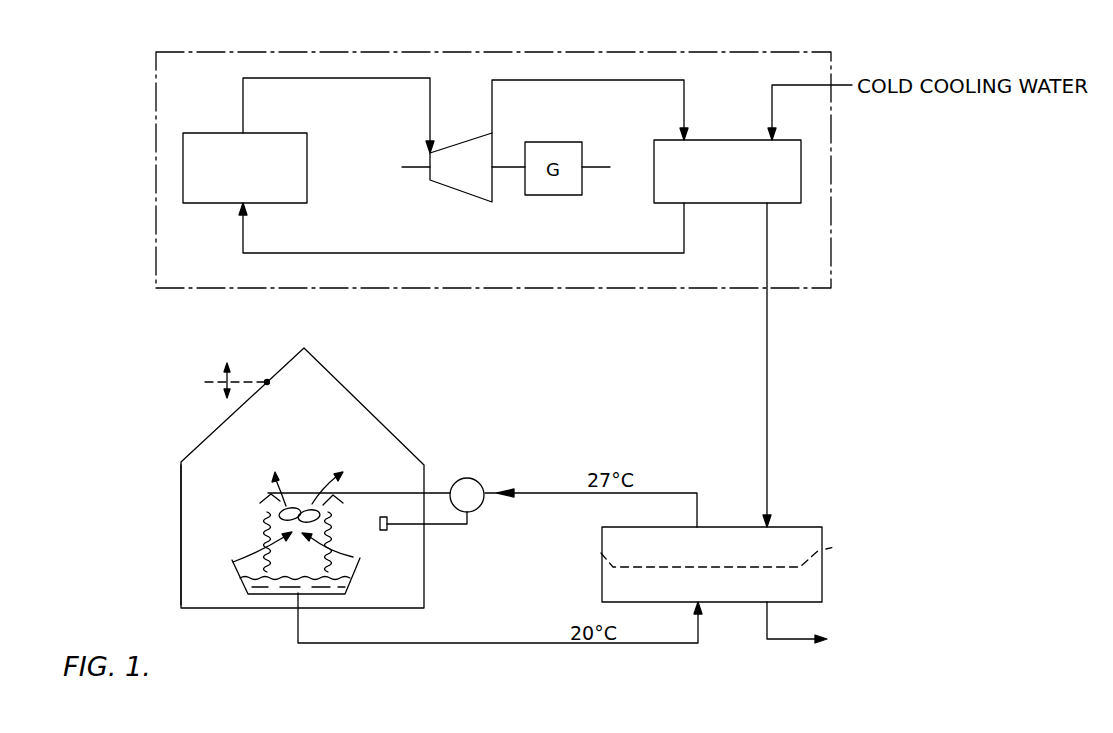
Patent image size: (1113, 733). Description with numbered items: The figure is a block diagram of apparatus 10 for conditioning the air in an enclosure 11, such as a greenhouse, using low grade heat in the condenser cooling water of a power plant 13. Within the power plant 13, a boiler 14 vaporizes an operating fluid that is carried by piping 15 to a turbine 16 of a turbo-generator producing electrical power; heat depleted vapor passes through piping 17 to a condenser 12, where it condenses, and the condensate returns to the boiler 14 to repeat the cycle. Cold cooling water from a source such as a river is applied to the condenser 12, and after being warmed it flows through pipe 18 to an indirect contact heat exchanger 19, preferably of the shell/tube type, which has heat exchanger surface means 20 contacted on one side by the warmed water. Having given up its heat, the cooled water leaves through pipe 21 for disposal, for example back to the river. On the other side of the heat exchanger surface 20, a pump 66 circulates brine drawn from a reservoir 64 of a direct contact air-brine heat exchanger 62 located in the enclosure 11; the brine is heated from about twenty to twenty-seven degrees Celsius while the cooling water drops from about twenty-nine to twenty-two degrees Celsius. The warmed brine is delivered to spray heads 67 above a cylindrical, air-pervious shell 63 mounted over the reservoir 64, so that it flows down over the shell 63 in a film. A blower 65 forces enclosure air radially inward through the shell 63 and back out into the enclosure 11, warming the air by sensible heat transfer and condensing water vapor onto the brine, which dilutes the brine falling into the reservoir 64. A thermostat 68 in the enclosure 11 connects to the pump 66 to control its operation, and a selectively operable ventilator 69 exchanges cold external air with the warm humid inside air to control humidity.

The apparatus 10 is at (416, 415).
The enclosure 11 is at (181, 517).
The condenser 12 is at (803, 158).
The power plant 13 is at (832, 186).
The boiler 14 is at (196, 201).
The piping 15 is at (370, 78).
The turbine 16 is at (462, 143).
The piping 17 is at (612, 80).
The pipe 18 is at (767, 327).
The indirect contact heat exchanger 19 is at (787, 527).
The heat exchanger surface means 20 is at (604, 562).
The pipe 21 is at (762, 637).
The direct contact air-brine heat exchanger 62 is at (196, 545).
The cylindrical, air-pervious shell 63 is at (266, 516).
The reservoir 64 is at (348, 582).
The blower 65 is at (297, 510).
The pump 66 is at (470, 479).
The spray heads 67 is at (345, 497).
The thermostat 68 is at (381, 530).
The ventilator 69 is at (205, 382).